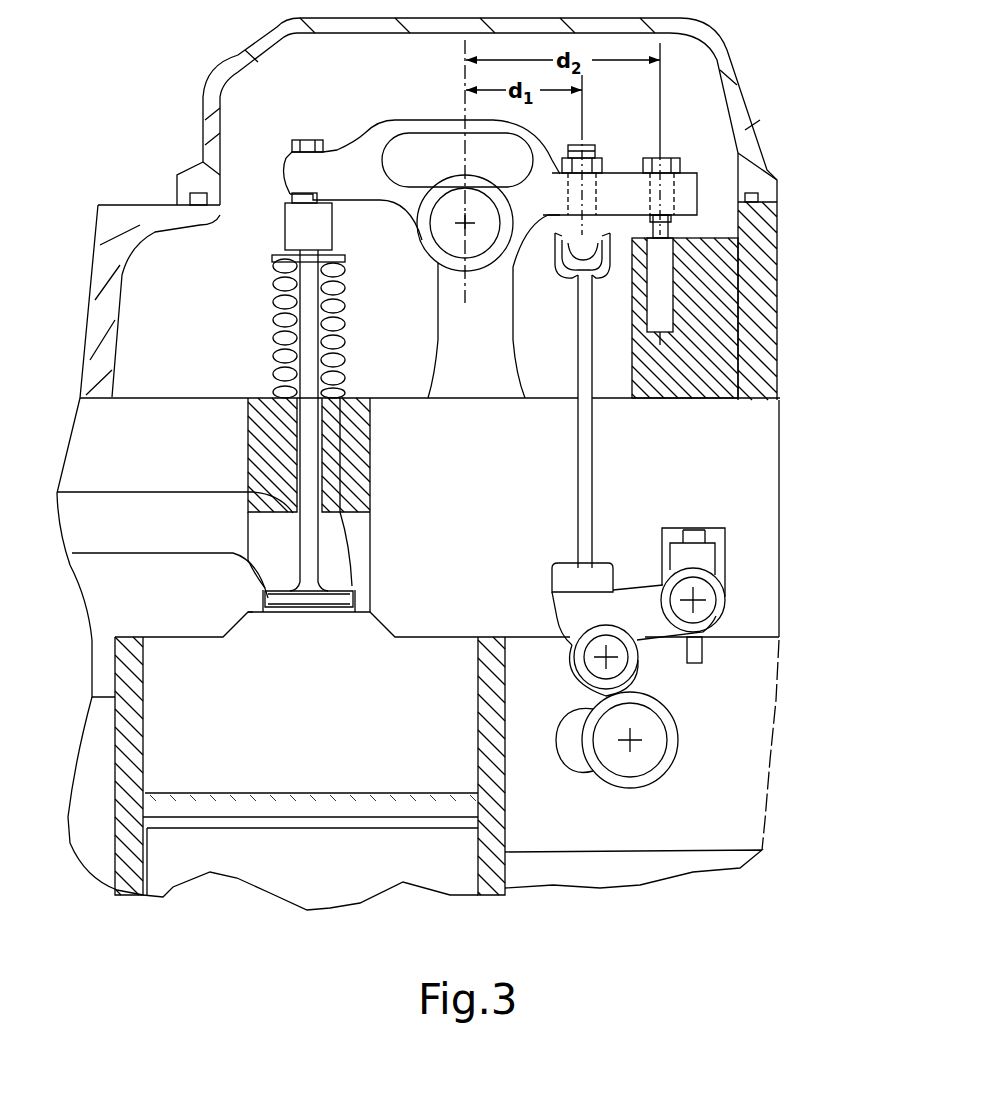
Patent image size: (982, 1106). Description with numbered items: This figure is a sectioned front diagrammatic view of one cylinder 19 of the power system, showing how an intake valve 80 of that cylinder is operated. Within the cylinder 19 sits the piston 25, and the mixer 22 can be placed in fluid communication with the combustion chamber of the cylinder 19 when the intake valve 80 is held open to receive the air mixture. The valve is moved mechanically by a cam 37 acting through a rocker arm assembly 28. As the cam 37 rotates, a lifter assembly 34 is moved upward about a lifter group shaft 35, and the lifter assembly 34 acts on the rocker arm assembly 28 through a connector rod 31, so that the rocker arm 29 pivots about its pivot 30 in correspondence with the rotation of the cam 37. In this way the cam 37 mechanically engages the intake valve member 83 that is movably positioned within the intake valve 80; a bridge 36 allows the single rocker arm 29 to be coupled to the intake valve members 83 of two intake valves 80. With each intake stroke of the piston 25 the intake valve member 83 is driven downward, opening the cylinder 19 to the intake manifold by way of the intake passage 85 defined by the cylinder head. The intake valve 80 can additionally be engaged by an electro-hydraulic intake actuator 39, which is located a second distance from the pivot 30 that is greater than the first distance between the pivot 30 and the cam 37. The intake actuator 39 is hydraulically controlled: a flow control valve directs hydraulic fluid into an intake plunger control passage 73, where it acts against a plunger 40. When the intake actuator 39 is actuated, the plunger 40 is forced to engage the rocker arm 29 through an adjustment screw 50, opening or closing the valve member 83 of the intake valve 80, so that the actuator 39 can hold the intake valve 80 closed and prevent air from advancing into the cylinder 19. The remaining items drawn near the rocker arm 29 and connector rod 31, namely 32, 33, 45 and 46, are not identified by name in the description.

The cylinder 19 is at (92, 697).
The mixer 22 is at (130, 508).
The piston 25 is at (272, 806).
The rocker arm assembly 28 is at (590, 128).
The rocker arm 29 is at (428, 118).
The pivot 30 is at (452, 180).
The connector rod 31 is at (574, 337).
The pushrod socket 32 is at (558, 268).
The nut 33 is at (604, 160).
The lifter assembly 34 is at (655, 661).
The lifter group shaft 35 is at (725, 620).
The bridge 36 is at (284, 238).
The cam 37 is at (668, 772).
The intake valve actuator 39 is at (699, 406).
The plunger 40 is at (680, 305).
The bolt 45 is at (672, 214).
The plunger 46 is at (650, 346).
The adjustment screw 50 is at (655, 217).
The intake plunger control passage 73 is at (666, 340).
The intake valve 80 is at (240, 446).
The intake valve member 83 is at (362, 467).
The intake passage 85 is at (358, 577).